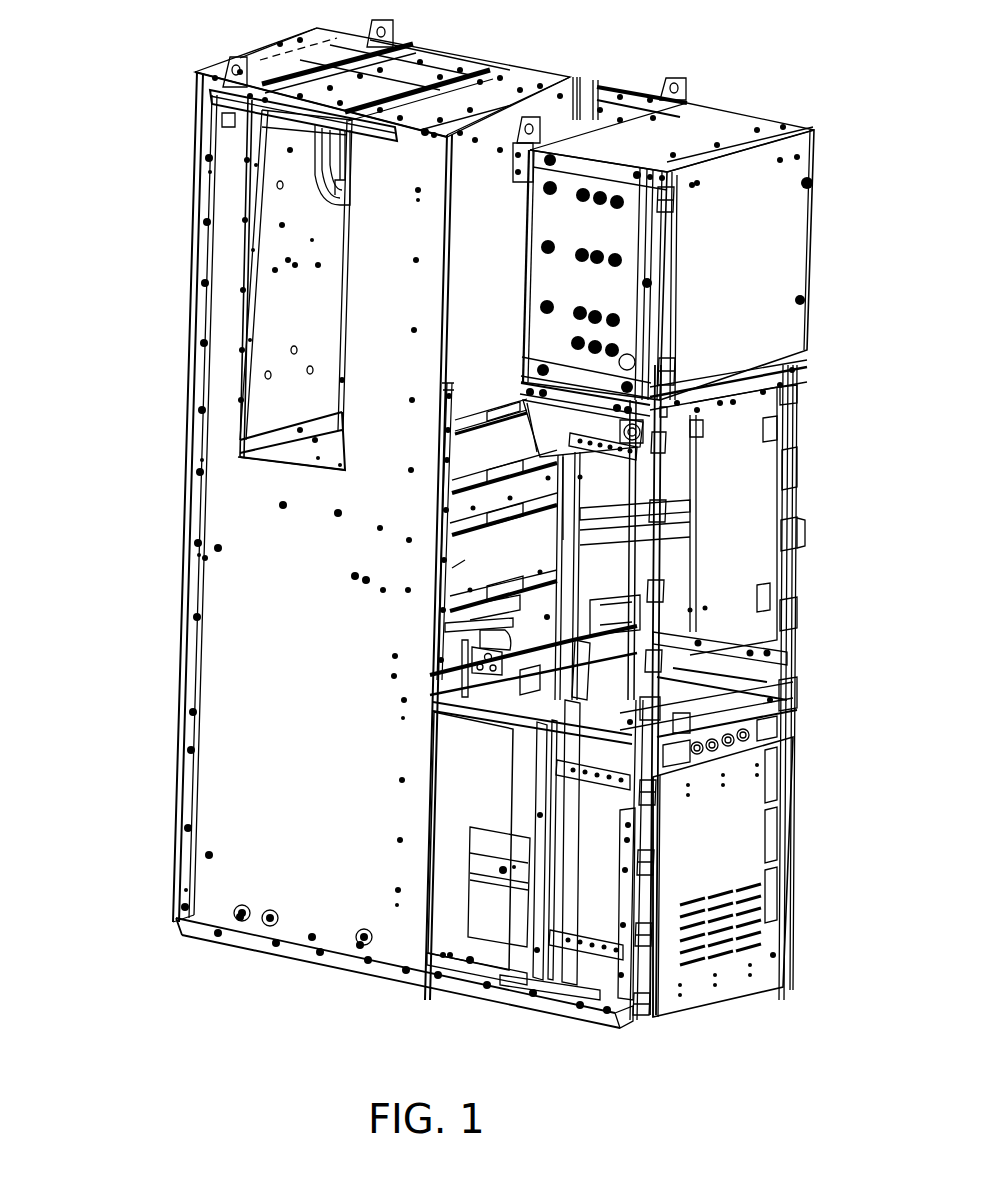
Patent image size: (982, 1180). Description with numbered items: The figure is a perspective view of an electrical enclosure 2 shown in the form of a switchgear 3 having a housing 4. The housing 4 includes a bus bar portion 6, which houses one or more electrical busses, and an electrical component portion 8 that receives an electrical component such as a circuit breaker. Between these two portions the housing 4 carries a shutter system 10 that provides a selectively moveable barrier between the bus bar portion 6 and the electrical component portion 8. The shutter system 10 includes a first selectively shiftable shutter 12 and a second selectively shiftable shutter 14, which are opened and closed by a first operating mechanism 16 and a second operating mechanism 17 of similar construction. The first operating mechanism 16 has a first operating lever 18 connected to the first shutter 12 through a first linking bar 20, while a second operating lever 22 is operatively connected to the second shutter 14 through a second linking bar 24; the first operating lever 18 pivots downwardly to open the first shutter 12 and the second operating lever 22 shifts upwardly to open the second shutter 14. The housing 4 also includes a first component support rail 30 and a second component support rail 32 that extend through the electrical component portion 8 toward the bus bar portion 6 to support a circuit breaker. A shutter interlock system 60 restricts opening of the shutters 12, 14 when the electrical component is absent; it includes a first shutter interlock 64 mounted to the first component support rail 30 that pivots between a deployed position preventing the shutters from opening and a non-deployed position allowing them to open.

The electrical enclosure 2 is at (126, 178).
The switchgear 3 is at (187, 432).
The housing 4 is at (265, 531).
The bus bar portion 6 is at (284, 364).
The electrical component portion 8 is at (750, 527).
The shutter system 10 is at (617, 493).
The first selectively shiftable shutter 12 is at (517, 574).
The second selectively shiftable shutter 14 is at (513, 466).
The first operating mechanism 16 is at (592, 670).
The second operating mechanism 17 is at (655, 602).
The first operating lever 18 is at (435, 618).
The first linking bar 20 is at (450, 570).
The second operating lever 22 is at (432, 658).
The second linking bar 24 is at (445, 500).
The first component support rail 30 is at (652, 788).
The second component support rail 32 is at (775, 728).
The shutter interlock system 60 is at (488, 755).
The first shutter interlock 64 is at (432, 702).